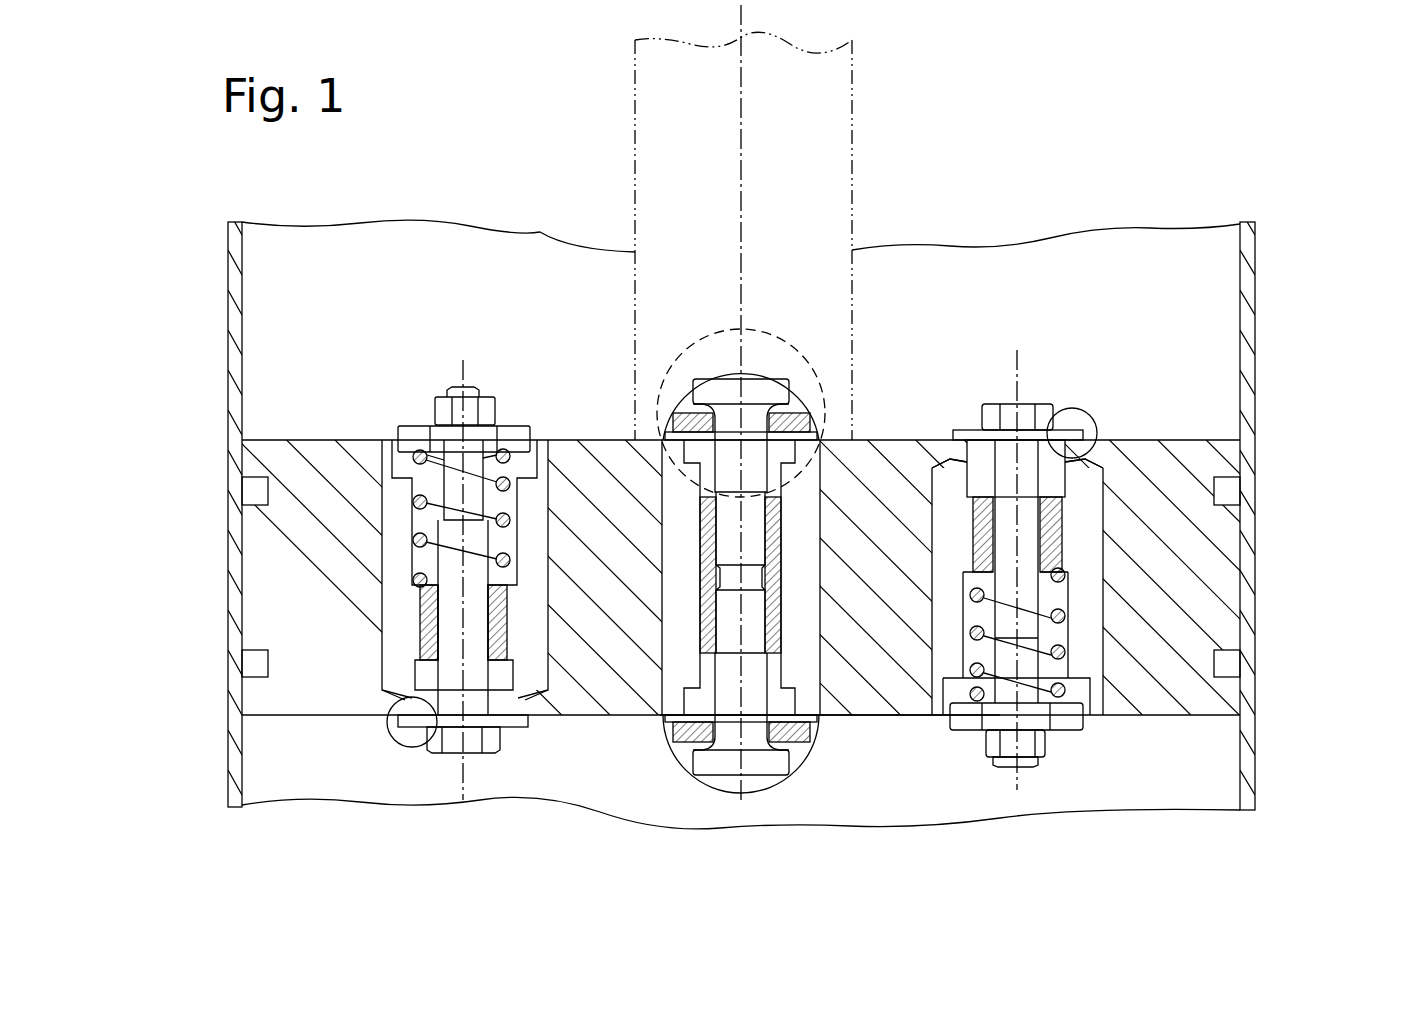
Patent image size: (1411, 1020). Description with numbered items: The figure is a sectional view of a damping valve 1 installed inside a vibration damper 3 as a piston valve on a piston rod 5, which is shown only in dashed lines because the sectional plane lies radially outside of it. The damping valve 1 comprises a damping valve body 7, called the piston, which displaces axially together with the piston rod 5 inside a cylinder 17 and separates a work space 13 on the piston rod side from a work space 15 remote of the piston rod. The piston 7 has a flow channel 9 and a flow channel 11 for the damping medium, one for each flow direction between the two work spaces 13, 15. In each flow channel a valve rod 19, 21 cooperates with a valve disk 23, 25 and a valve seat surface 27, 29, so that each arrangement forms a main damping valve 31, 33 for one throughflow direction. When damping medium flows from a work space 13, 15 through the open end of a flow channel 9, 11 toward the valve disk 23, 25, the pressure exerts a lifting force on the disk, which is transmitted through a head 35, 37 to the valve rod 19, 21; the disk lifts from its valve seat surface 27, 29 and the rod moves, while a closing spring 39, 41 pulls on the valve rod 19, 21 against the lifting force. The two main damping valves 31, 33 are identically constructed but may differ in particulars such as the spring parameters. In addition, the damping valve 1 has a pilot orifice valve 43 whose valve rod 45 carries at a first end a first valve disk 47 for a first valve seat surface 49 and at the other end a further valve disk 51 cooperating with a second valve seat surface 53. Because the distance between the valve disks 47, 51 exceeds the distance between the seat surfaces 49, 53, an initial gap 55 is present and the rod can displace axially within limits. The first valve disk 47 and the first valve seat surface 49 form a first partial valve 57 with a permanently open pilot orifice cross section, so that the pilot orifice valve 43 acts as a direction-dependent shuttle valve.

The damping valve 1 is at (1163, 192).
The vibration damper 3 is at (182, 788).
The piston rod 5 is at (852, 98).
The damping valve body 7 is at (1175, 570).
The flow channel 9 is at (536, 560).
The flow channel 11 is at (950, 593).
The work space on the piston rod side 13 is at (370, 352).
The work space remote of the piston rod 15 is at (612, 810).
The cylinder 17 is at (240, 598).
The valve rod 19 is at (453, 622).
The valve rod 21 is at (1032, 527).
The valve disk 23 is at (420, 727).
The valve disk 25 is at (1065, 438).
The valve seat surface 27 is at (522, 703).
The valve seat surface 29 is at (960, 452).
The main damping valve 31 is at (396, 745).
The main damping valve 33 is at (1092, 410).
The head 35 is at (491, 754).
The head 37 is at (1027, 413).
The closing spring 39 is at (413, 502).
The closing spring 41 is at (1066, 622).
The pilot orifice valve 43 is at (760, 790).
The valve rod 45 is at (708, 665).
The first valve disk 47 is at (805, 425).
The first valve seat surface 49 is at (885, 439).
The further valve disk 51 is at (822, 722).
The second valve seat surface 53 is at (915, 720).
The initial gap 55 is at (845, 717).
The first partial valve 57 is at (717, 330).